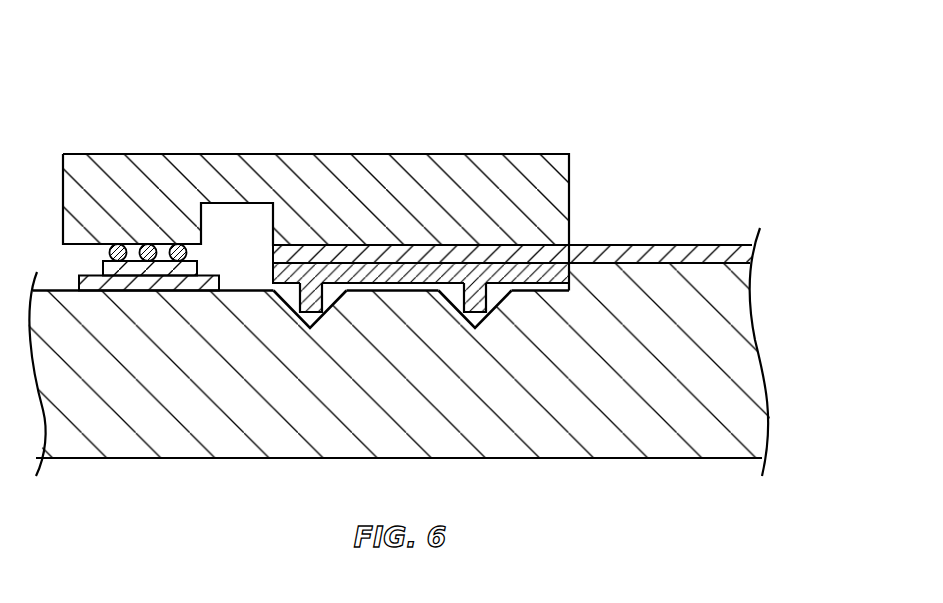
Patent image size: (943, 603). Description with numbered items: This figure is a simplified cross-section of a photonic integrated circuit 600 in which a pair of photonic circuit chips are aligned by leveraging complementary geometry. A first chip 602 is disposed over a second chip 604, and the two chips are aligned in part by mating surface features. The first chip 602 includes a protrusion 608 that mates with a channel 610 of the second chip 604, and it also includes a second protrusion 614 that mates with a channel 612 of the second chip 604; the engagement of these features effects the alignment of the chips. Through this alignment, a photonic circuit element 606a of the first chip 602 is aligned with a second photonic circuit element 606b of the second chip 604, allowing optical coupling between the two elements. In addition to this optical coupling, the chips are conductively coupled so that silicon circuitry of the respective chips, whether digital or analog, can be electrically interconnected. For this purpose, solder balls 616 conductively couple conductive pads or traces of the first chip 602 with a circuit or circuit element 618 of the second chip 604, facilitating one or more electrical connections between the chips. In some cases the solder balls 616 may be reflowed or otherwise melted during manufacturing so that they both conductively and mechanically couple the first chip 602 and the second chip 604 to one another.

The photonic integrated circuit 600 is at (435, 252).
The first chip 602 is at (572, 153).
The second chip 604 is at (787, 362).
The photonic circuit element 606a is at (348, 245).
The second photonic circuit element 606b is at (673, 245).
The protrusion 608 is at (299, 292).
The channel 610 is at (320, 312).
The channel 612 is at (462, 291).
The second protrusion 614 is at (485, 312).
The solder balls 616 is at (102, 253).
The circuit or circuit element 618 is at (200, 263).